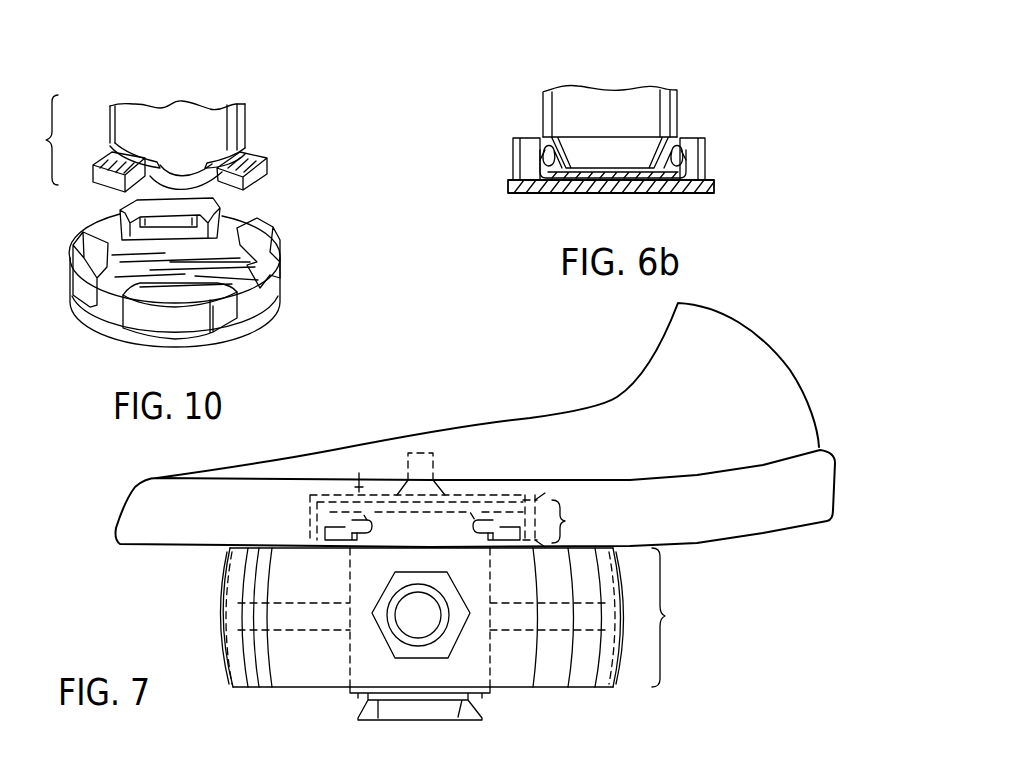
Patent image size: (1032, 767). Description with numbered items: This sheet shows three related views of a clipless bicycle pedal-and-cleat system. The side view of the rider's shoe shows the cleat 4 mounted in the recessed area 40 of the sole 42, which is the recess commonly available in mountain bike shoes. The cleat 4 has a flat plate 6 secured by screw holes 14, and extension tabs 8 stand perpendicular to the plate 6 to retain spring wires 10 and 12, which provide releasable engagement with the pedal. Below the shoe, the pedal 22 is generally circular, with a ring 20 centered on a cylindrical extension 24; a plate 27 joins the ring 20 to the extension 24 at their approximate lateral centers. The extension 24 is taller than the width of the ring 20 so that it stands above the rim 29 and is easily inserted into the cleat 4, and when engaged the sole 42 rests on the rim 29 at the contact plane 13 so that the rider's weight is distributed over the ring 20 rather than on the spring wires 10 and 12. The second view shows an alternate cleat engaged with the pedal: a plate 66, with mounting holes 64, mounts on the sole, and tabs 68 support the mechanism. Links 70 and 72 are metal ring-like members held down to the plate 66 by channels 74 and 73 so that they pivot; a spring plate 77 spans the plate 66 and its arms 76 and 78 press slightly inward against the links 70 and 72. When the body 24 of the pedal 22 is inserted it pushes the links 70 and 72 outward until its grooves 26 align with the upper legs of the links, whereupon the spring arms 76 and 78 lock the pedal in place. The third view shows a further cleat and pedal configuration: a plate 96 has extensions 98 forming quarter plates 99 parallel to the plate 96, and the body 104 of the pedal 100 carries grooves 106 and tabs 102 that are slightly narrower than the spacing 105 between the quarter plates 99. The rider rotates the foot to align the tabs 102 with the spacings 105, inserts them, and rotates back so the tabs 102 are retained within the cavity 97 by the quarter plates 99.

In FIG. 7, the cleat 4 is at (588, 534).
In FIG. 7, the flat plate 6 is at (358, 470).
In FIG. 7, the extension tabs 8 is at (310, 508).
In FIG. 7, the spring wire 10 is at (345, 546).
In FIG. 7, the spring wire 12 is at (508, 546).
In FIG. 7, the plane 13 is at (140, 546).
In FIG. 7, the screw holes 14 is at (440, 486).
In FIG. 7, the ring 20 is at (220, 615).
In FIG. 7, the pedal 22 is at (701, 631).
In FIG. 6b, the extension 24 is at (665, 106).
In FIG. 6b, the grooves 26 is at (660, 141).
In FIG. 7, the plate 27 is at (278, 633).
In FIG. 7, the rim 29 is at (232, 544).
In FIG. 7, the recessed area 40 is at (540, 497).
In FIG. 7, the sole 42 is at (723, 520).
In FIG. 6b, the mounting holes 64 is at (622, 191).
In FIG. 6b, the plate 66 is at (556, 192).
In FIG. 6b, the tabs 68 is at (513, 155).
In FIG. 6b, the link 70 is at (540, 157).
In FIG. 6b, the link 72 is at (688, 158).
In FIG. 6b, the channel 73 is at (667, 190).
In FIG. 6b, the channel 74 is at (550, 193).
In FIG. 6b, the spring arm 76 is at (545, 148).
In FIG. 6b, the spring plate 77 is at (596, 177).
In FIG. 6b, the spring arm 78 is at (682, 148).
In FIG. 10, the plate 96 is at (250, 310).
In FIG. 10, the cavity 97 is at (262, 246).
In FIG. 10, the extensions 98 is at (140, 322).
In FIG. 10, the quarter plates 99 is at (95, 246).
In FIG. 10, the pedal 100 is at (38, 153).
In FIG. 10, the tabs 102 is at (100, 162).
In FIG. 10, the body 104 is at (232, 114).
In FIG. 10, the spacing 105 is at (250, 292).
In FIG. 10, the grooves 106 is at (118, 155).